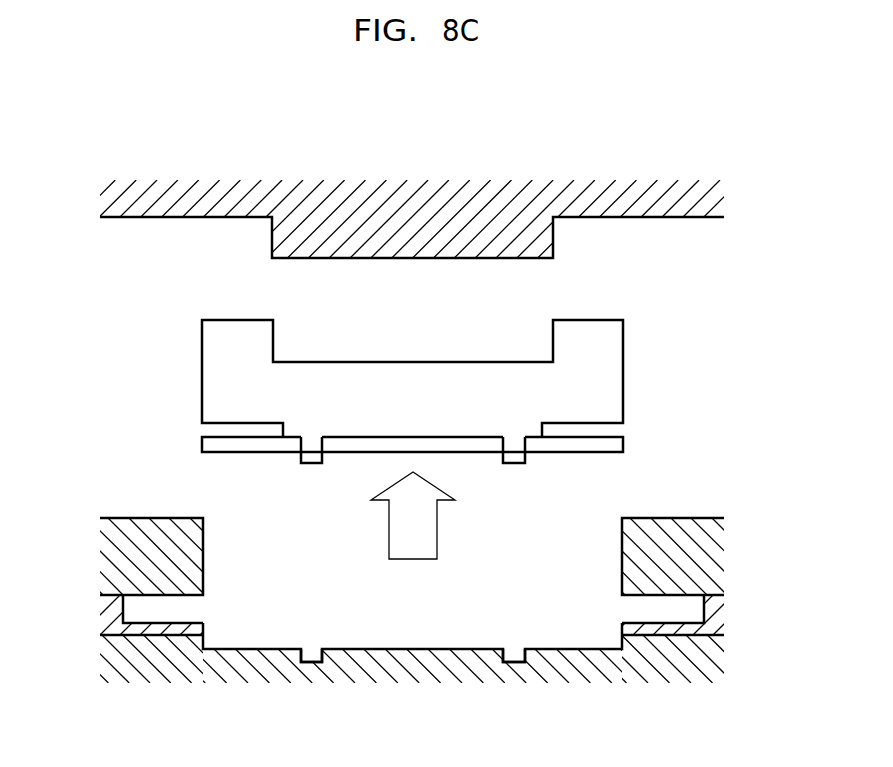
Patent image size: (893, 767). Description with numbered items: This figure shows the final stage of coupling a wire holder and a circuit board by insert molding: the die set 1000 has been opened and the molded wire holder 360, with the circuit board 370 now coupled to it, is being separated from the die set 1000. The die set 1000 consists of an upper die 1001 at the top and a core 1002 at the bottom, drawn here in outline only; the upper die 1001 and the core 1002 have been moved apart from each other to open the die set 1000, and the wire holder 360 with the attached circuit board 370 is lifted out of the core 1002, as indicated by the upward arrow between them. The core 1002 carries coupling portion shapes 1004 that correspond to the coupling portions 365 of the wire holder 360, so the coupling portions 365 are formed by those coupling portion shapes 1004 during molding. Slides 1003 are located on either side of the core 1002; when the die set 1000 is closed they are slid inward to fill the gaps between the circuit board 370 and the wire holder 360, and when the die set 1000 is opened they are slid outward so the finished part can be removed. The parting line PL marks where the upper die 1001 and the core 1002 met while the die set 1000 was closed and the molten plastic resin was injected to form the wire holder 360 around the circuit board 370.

The die set 1000 is at (674, 144).
The upper die 1001 is at (790, 209).
The core 1002 is at (407, 620).
The slides 1003 is at (115, 611).
The coupling portion shapes 1004 is at (310, 665).
The wire holder 360 is at (625, 374).
The coupling portions 365 is at (310, 465).
The circuit board 370 is at (412, 472).
The parting line PL is at (140, 520).